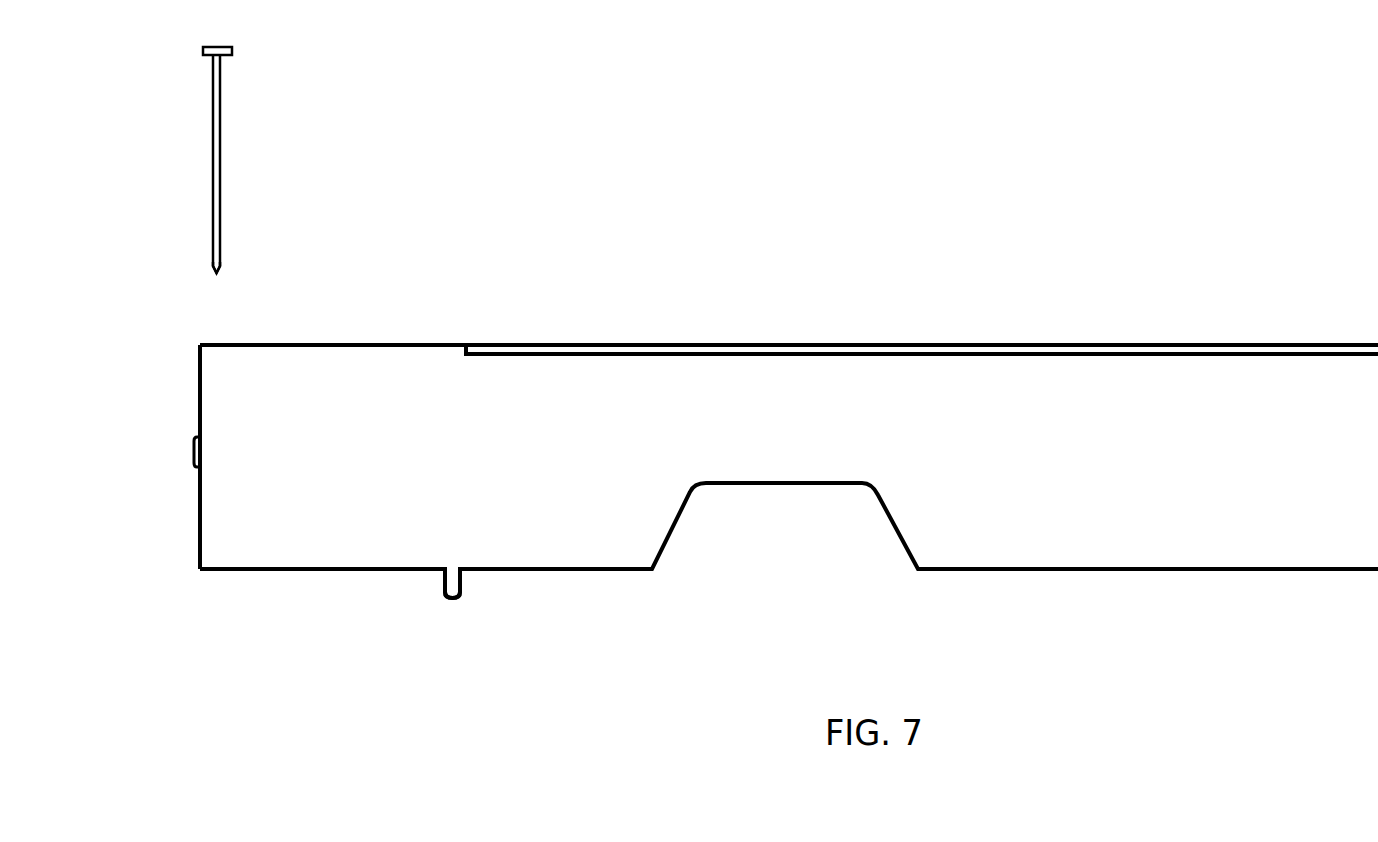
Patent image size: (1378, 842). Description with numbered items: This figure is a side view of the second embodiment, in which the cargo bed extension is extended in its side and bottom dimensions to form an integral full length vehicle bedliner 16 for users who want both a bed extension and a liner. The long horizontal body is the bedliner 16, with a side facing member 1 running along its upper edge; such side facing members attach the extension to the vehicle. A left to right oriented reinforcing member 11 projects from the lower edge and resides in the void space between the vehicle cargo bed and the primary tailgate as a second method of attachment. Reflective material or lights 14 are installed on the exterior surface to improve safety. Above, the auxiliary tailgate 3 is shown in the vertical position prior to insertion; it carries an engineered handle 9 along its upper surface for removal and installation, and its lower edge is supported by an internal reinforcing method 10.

The side facing member 1 is at (873, 348).
The auxiliary tailgate 3 is at (210, 158).
The engineered handle 9 is at (234, 50).
The internal reinforcing method 10 is at (220, 270).
The reinforcing member 11 is at (461, 590).
The reflective material or lights 14 is at (193, 450).
The bedliner 16 is at (1295, 475).